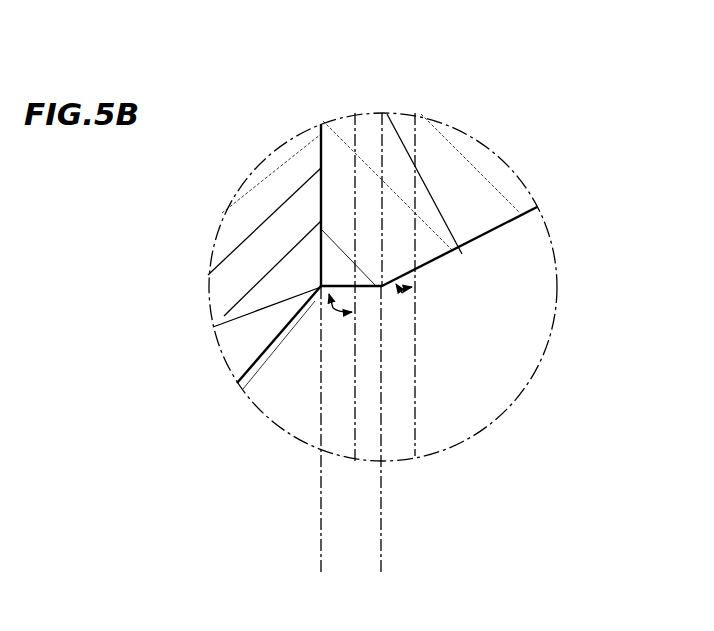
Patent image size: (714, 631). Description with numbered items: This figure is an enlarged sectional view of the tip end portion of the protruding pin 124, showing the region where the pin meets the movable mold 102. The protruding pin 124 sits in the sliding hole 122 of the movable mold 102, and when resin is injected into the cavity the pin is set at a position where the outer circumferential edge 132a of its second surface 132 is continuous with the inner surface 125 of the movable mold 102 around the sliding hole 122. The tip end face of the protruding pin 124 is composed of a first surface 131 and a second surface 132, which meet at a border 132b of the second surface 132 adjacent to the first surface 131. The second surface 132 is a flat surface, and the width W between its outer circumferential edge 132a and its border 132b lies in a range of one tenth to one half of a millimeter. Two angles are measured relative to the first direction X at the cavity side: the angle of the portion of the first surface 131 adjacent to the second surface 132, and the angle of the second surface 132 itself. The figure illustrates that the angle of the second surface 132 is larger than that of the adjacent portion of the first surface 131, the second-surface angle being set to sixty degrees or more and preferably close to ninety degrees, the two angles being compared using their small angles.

The movable mold 102 is at (260, 193).
The sliding hole 122 is at (340, 118).
The protruding pin 124 is at (462, 172).
The inner surface 125 is at (285, 328).
The first surface 131 is at (440, 252).
The second surface 132 is at (321, 168).
The outer circumferential edge 132a is at (320, 289).
The border 132b is at (380, 283).
The first direction X is at (416, 413).
The width W is at (380, 570).